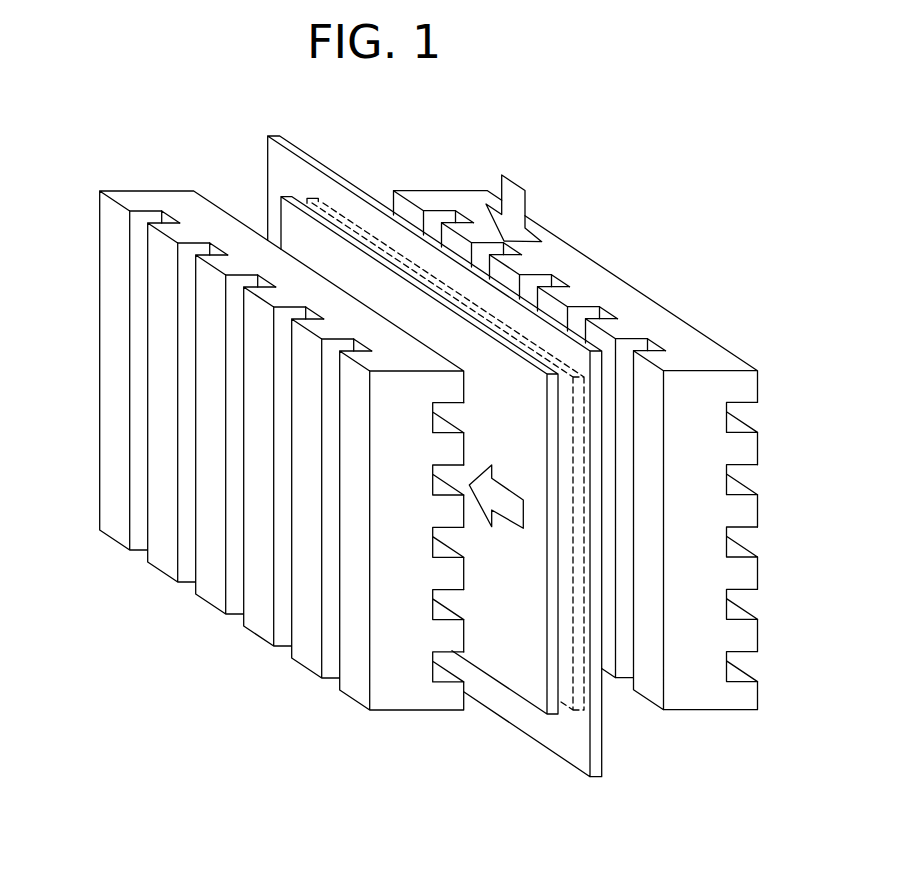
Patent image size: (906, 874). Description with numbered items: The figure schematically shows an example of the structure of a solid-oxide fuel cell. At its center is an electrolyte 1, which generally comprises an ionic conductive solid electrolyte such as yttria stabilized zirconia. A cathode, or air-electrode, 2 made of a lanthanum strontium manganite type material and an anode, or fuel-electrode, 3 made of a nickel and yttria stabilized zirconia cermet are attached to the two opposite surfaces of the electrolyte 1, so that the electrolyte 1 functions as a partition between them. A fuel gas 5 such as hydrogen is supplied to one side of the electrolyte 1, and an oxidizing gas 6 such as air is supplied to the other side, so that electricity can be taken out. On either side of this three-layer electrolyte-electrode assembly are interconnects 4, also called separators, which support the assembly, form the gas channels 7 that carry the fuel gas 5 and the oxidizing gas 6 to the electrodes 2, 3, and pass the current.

The electrolyte 1 is at (560, 740).
The cathode (air-electrode) 2 is at (580, 699).
The anode (fuel-electrode) 3 is at (517, 683).
The interconnect (separator) 4 is at (160, 572).
The fuel gas 5 is at (496, 514).
The oxidizing gas 6 is at (514, 191).
The gas channel 7 is at (223, 253).